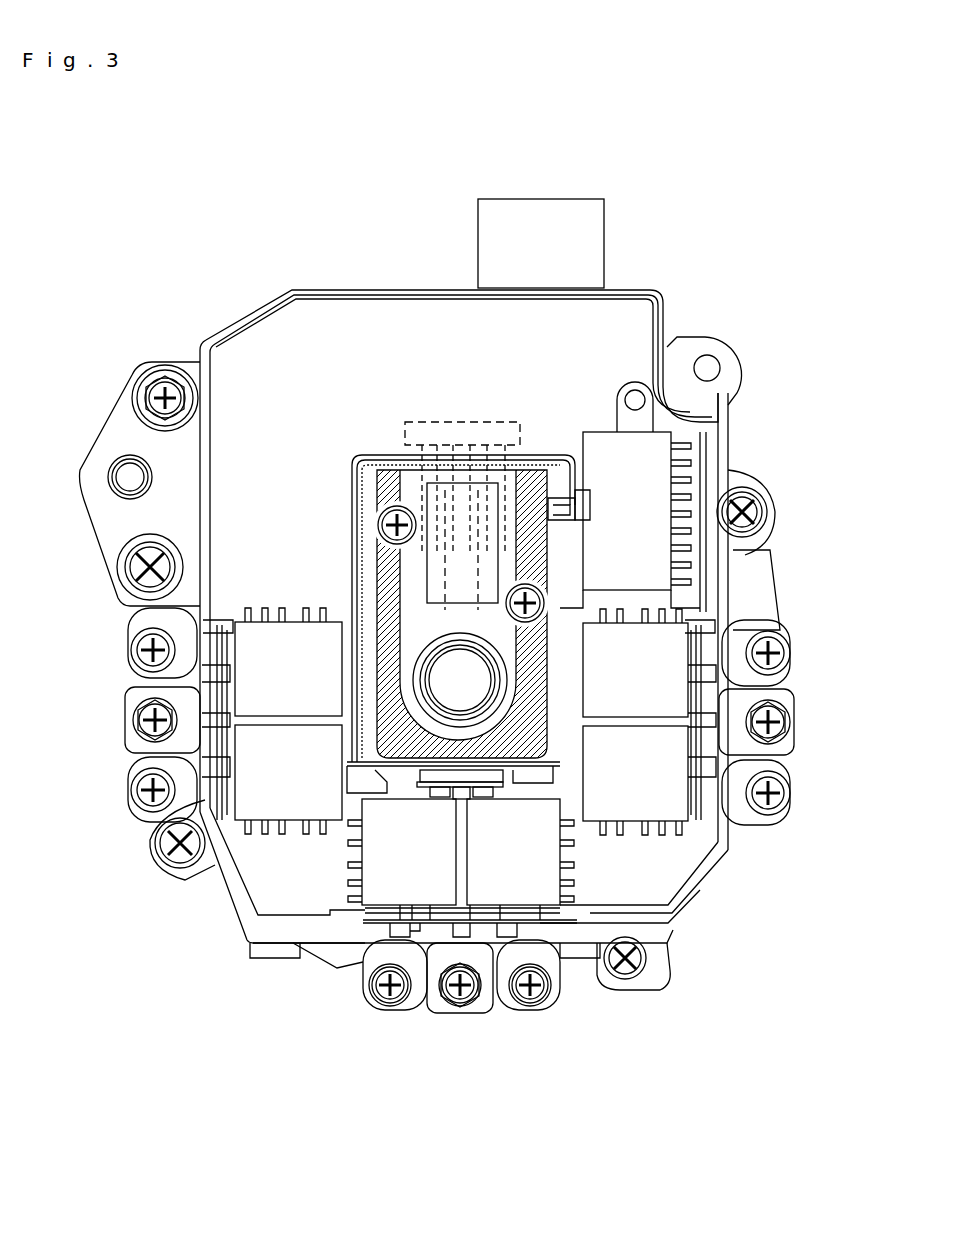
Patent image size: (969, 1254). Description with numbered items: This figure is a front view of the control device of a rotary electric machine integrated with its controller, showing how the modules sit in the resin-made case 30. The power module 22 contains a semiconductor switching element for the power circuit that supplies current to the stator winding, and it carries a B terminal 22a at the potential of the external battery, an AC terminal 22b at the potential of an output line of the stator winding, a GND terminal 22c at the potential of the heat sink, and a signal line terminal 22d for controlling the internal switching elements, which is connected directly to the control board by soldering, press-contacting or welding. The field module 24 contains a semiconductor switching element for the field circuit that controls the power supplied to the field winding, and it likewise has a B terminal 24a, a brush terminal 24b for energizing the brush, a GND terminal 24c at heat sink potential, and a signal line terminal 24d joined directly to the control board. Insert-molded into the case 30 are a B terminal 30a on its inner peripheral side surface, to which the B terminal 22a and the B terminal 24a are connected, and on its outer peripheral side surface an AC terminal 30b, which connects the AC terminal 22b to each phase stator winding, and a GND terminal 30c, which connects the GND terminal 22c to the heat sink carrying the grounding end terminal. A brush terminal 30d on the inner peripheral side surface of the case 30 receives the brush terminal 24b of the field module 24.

The case 30 is at (252, 322).
The B terminal 30a is at (563, 762).
The AC terminal 30b is at (543, 960).
The GND terminal 30c is at (527, 993).
The brush terminal 30d is at (553, 508).
The power module 22 is at (285, 672).
The B terminal 22a is at (490, 795).
The AC terminal 22b is at (597, 960).
The GND terminal 22c is at (450, 1000).
The signal line terminal 22d is at (578, 918).
The field module 24 is at (635, 490).
The B terminal 24a is at (742, 588).
The brush terminal 24b is at (585, 505).
The GND terminal 24c is at (638, 400).
The signal line terminal 24d is at (692, 445).